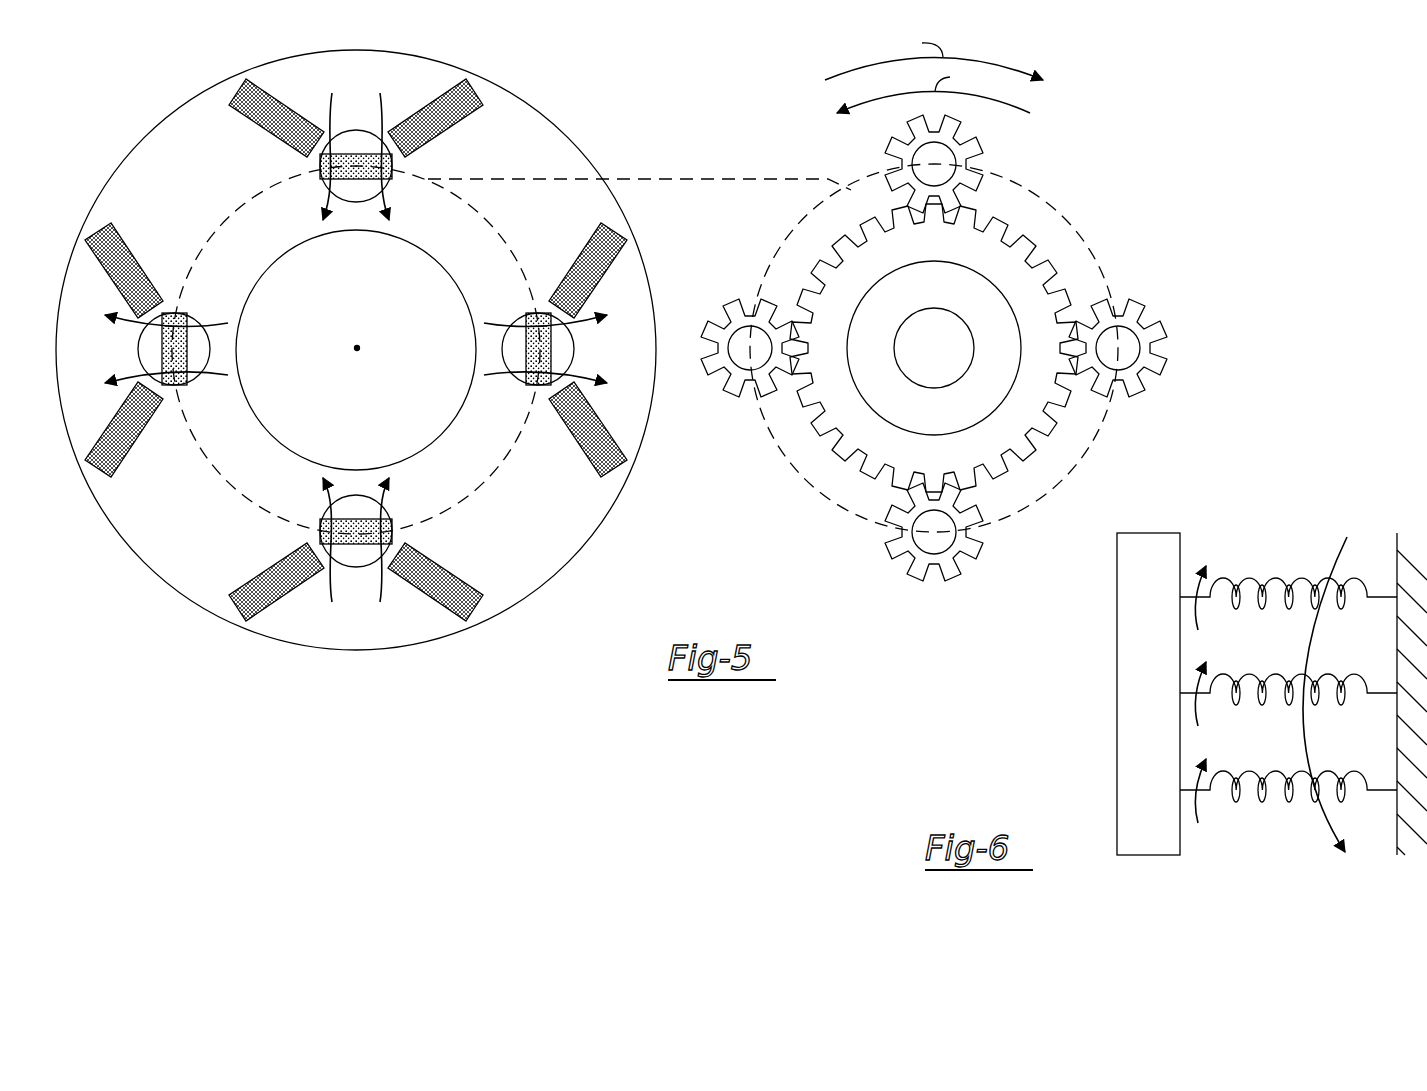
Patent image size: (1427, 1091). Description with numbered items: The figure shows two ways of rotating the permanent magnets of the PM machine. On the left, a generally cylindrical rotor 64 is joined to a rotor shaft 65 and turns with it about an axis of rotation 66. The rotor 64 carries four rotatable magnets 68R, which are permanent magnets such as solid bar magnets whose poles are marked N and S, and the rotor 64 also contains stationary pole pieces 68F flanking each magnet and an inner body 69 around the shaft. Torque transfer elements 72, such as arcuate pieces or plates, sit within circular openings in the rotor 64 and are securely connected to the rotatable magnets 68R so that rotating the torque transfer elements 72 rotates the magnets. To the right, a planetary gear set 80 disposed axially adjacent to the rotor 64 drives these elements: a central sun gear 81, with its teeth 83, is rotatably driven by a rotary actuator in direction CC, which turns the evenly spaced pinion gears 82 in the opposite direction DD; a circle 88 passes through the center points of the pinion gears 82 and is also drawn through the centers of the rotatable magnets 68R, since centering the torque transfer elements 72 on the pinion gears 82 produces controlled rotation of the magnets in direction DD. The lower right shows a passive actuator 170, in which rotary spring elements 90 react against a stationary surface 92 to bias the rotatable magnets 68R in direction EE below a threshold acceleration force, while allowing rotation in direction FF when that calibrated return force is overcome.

In FIG. 5, the rotor 64 is at (552, 158).
In FIG. 5, the rotor shaft 65 is at (364, 305).
In FIG. 5, the axis of rotation 66 is at (357, 352).
In FIG. 5, the field pole pieces 68F is at (267, 128).
In FIG. 5, the rotatable magnets 68R is at (356, 202).
In FIG. 6, the rotatable magnets 68R is at (1148, 694).
In FIG. 5, the rotor body 69 is at (448, 430).
In FIG. 5, the torque transfer elements 72 is at (356, 130).
In FIG. 5, the planetary gear set 80 is at (951, 307).
In FIG. 5, the sun gear 81 is at (945, 341).
In FIG. 5, the pinion gears 82 is at (975, 166).
In FIG. 5, the gear teeth 83 is at (843, 240).
In FIG. 5, the circle 88 is at (513, 243).
In FIG. 6, the rotary spring elements 90 is at (1275, 820).
In FIG. 6, the stationary surface 92 is at (1388, 537).
In FIG. 6, the passive actuator 170 is at (1272, 655).